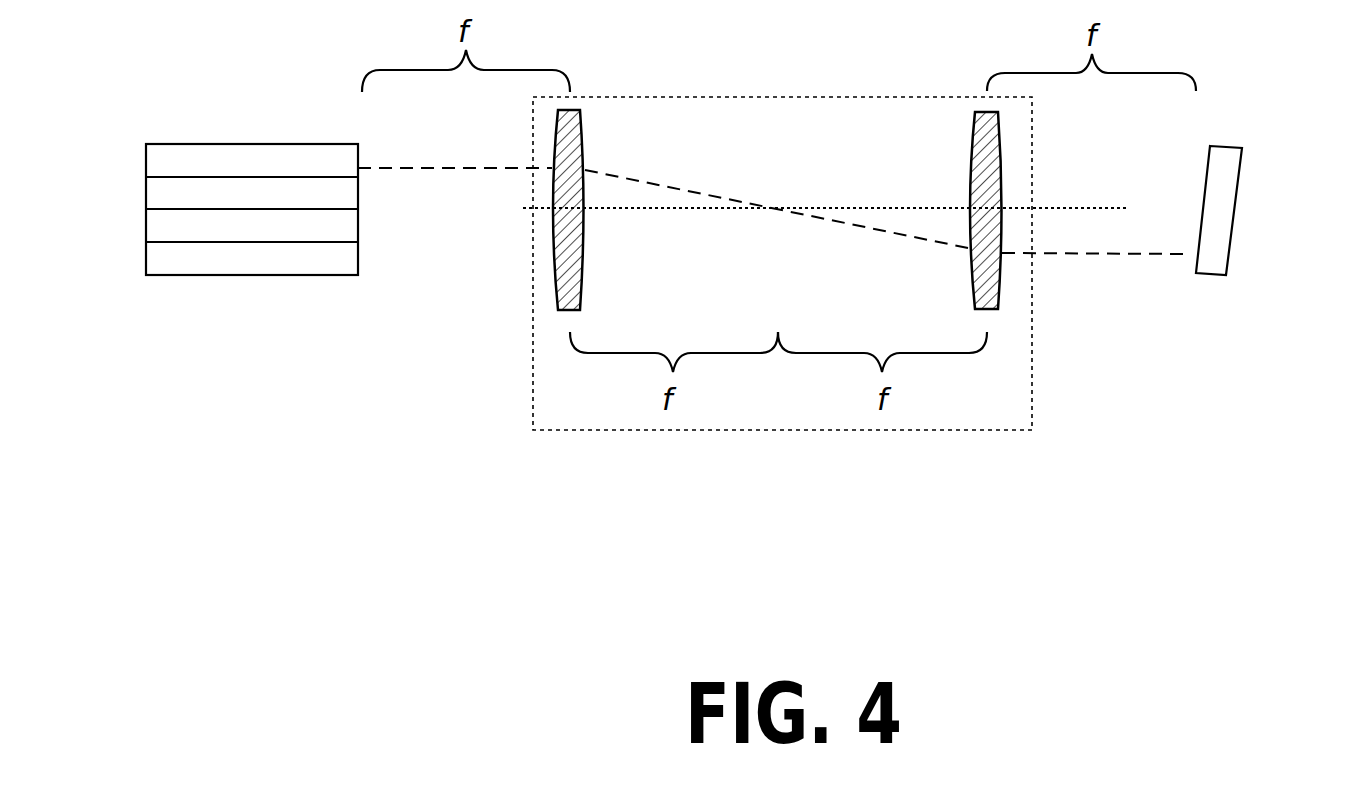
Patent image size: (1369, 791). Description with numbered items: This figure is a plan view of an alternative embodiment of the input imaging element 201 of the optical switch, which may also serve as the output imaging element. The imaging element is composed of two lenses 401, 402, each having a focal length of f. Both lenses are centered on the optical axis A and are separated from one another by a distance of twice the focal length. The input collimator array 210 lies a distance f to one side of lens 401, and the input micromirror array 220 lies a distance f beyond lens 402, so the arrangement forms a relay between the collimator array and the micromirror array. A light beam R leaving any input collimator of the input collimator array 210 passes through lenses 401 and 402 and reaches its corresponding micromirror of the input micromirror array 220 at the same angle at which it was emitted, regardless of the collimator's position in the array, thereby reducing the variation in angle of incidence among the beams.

The input imaging element 201 is at (752, 432).
The input collimator array 210 is at (253, 280).
The input micromirror array 220 is at (1234, 277).
The lens 401 is at (577, 124).
The lens 402 is at (984, 283).
The light beam R is at (522, 173).
The optical axis A is at (824, 194).